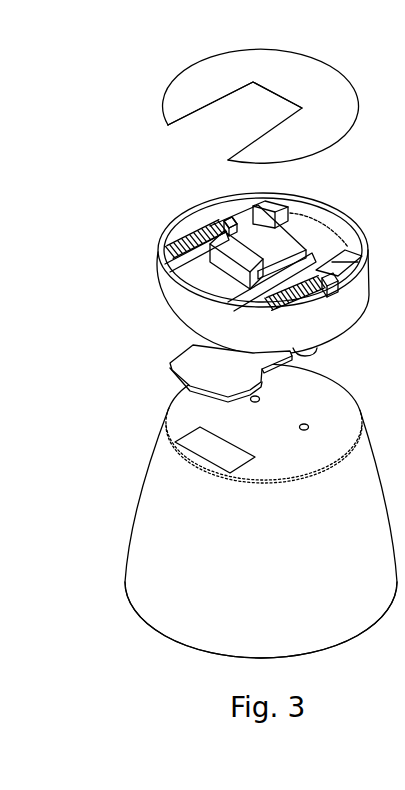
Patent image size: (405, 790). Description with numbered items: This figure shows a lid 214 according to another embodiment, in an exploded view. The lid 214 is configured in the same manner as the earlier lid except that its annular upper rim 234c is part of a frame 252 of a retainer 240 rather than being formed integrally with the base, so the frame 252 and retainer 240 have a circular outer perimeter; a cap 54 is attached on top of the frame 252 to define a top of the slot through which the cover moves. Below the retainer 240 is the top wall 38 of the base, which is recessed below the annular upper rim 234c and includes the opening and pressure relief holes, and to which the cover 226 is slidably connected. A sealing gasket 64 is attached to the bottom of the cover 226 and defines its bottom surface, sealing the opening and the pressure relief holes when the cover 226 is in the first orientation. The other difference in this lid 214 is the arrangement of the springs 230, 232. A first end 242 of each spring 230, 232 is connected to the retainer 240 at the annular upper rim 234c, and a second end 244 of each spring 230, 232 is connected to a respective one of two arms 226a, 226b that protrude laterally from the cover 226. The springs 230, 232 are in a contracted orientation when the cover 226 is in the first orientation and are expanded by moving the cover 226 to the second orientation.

The cap 54 is at (183, 92).
The retainer 240 is at (374, 72).
The frame 252 is at (218, 228).
The spring 230 is at (163, 272).
The cover 226 is at (232, 271).
The arm 226a is at (257, 212).
The arm 226b is at (338, 297).
The annular upper rim 234c is at (163, 294).
The first end 242 is at (318, 277).
The second end 244 is at (284, 302).
The spring 232 is at (303, 307).
The sealing gasket 64 is at (193, 363).
The top wall 38 is at (183, 420).
The lid 214 is at (122, 643).